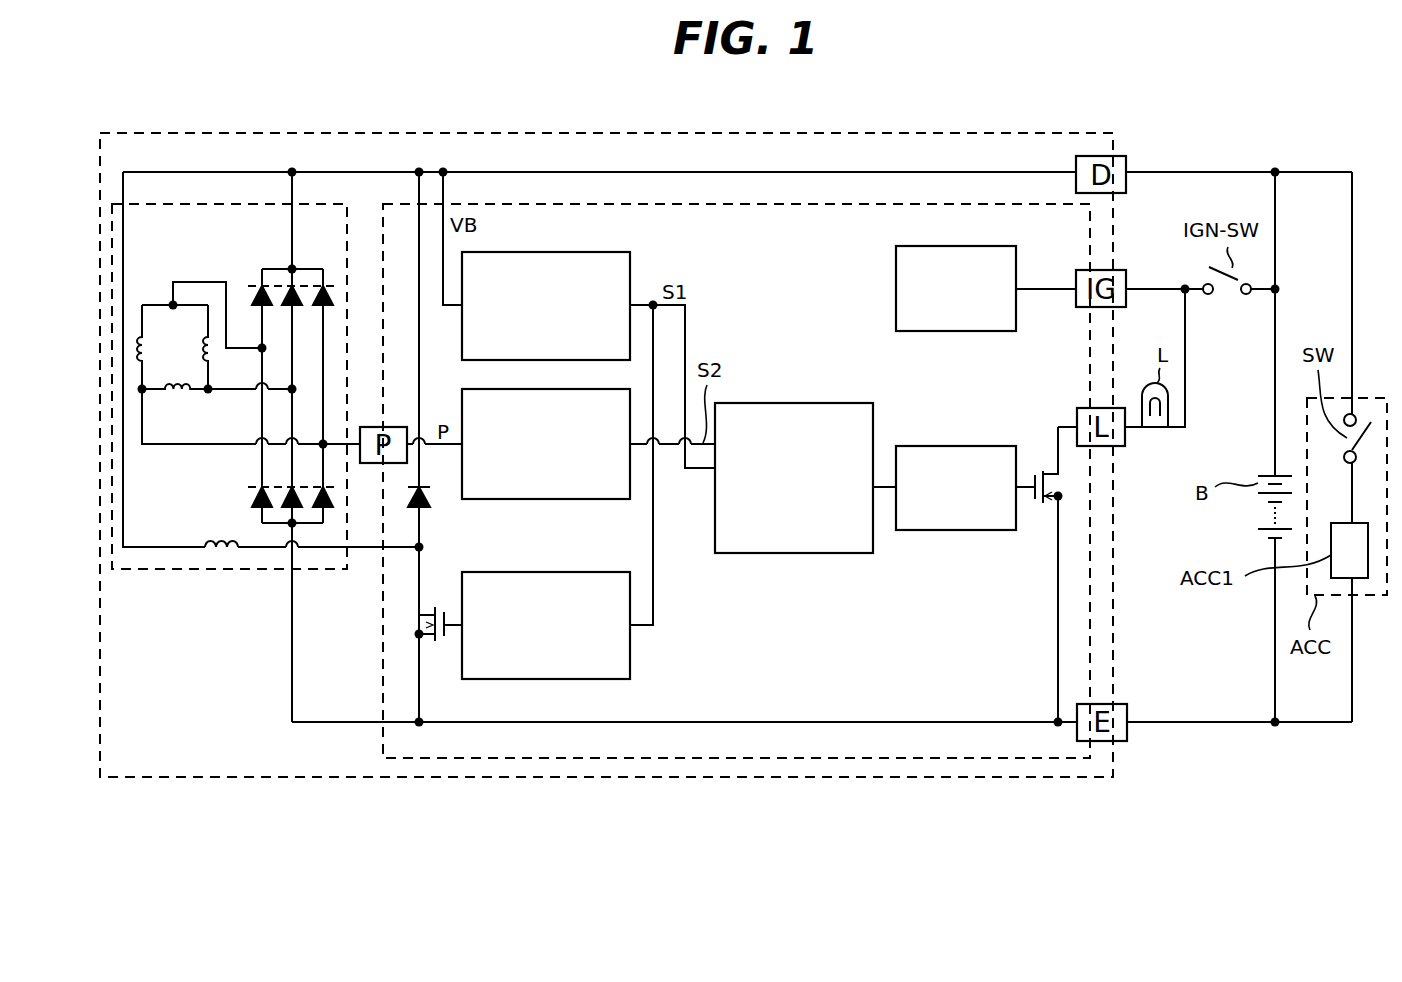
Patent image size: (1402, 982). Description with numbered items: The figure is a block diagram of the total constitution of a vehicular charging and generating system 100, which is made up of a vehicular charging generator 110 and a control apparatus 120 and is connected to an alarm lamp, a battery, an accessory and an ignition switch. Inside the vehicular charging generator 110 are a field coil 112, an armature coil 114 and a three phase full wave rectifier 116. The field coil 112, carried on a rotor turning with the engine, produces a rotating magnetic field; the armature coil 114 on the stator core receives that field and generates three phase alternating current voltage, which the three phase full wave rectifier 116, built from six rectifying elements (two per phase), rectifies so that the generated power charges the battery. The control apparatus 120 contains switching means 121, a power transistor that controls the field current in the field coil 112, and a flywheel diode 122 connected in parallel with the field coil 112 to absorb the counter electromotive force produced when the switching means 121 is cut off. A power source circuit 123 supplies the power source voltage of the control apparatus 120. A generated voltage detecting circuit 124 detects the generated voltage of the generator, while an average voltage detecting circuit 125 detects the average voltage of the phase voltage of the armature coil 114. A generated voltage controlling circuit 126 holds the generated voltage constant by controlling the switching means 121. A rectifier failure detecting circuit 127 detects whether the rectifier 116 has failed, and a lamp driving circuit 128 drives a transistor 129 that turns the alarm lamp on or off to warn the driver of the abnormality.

The vehicular charging and generating system 100 is at (186, 779).
The vehicular charging generator 110 is at (165, 572).
The field coil 112 is at (210, 545).
The armature coil 114 is at (172, 302).
The three phase full wave rectifier 116 is at (290, 268).
The control apparatus 120 is at (697, 760).
The switching means 121 is at (440, 642).
The flywheel diode 122 is at (433, 510).
The power source circuit 123 is at (950, 247).
The generated voltage detecting circuit 124 is at (556, 253).
The average voltage detecting circuit 125 is at (556, 389).
The generated voltage controlling circuit 126 is at (560, 572).
The rectifier failure detecting circuit 127 is at (815, 403).
The lamp driving circuit 128 is at (962, 446).
The transistor 129 is at (1037, 505).